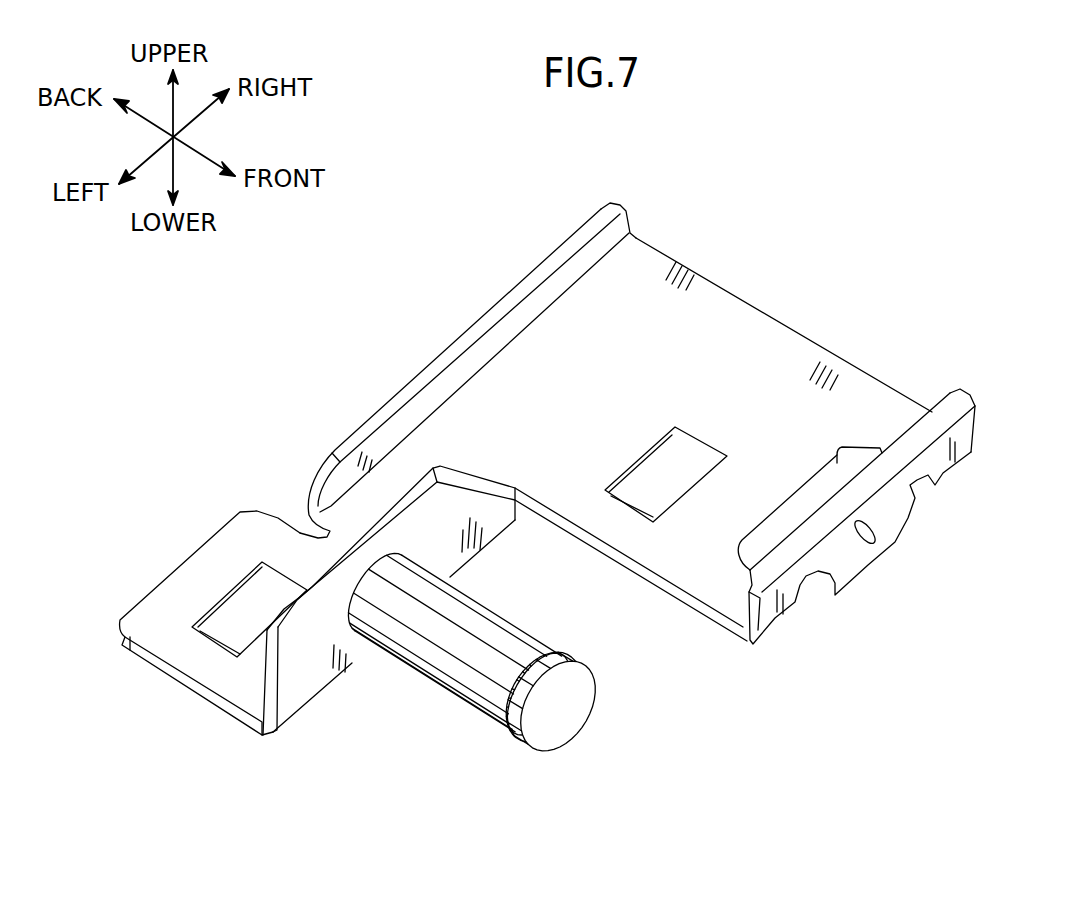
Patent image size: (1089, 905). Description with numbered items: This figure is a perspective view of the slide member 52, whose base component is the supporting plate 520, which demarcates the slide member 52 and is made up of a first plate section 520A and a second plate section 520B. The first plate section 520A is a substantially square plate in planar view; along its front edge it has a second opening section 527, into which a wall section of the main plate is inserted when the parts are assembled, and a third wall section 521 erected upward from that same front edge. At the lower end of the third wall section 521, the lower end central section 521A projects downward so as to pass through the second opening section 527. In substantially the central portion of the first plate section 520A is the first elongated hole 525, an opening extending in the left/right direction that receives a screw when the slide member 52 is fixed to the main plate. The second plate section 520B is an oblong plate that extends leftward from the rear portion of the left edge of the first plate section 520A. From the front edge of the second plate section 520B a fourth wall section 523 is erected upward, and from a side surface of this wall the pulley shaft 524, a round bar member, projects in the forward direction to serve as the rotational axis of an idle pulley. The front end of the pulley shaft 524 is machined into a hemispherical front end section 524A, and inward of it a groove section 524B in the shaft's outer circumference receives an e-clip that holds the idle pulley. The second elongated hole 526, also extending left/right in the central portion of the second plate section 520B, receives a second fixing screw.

The slide member 52 is at (670, 237).
The supporting plate 520 is at (202, 322).
The first plate section 520A is at (527, 365).
The second plate section 520B is at (243, 532).
The third wall section 521 is at (978, 420).
The lower end central section 521A is at (863, 567).
The fourth wall section 523 is at (305, 665).
The pulley shaft 524 is at (458, 675).
The front end section 524A is at (582, 713).
The groove section 524B is at (512, 736).
The first elongated hole 525 is at (683, 453).
The second elongated hole 526 is at (217, 635).
The second opening section 527 is at (848, 470).